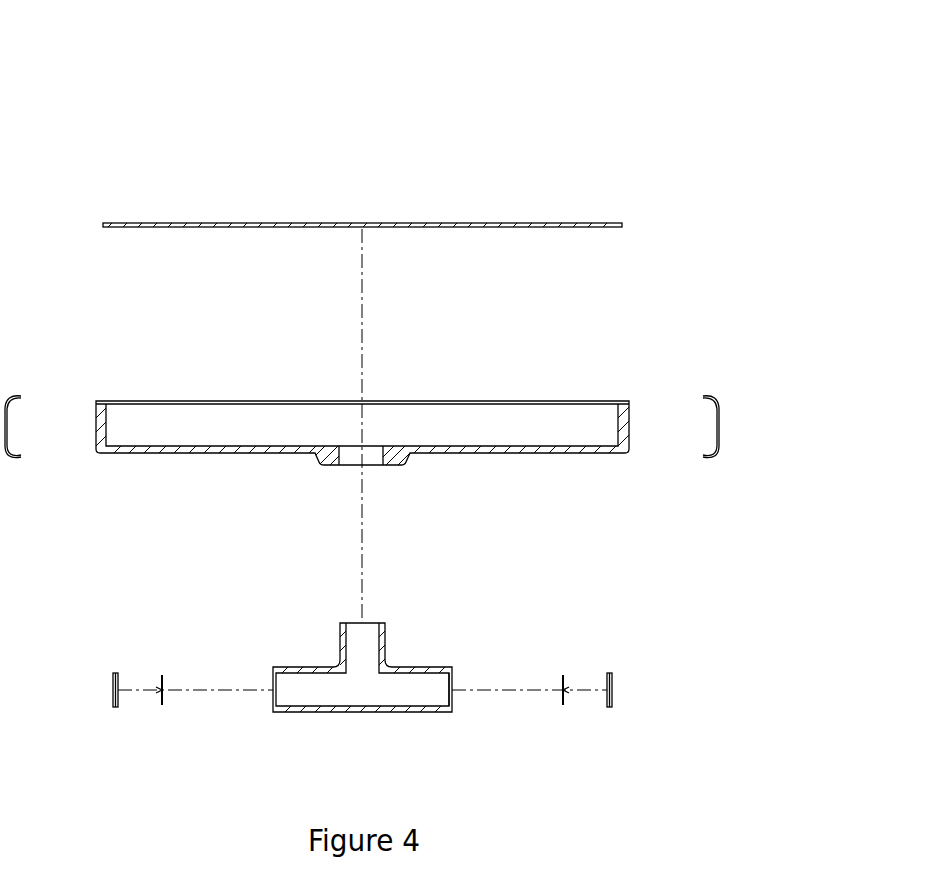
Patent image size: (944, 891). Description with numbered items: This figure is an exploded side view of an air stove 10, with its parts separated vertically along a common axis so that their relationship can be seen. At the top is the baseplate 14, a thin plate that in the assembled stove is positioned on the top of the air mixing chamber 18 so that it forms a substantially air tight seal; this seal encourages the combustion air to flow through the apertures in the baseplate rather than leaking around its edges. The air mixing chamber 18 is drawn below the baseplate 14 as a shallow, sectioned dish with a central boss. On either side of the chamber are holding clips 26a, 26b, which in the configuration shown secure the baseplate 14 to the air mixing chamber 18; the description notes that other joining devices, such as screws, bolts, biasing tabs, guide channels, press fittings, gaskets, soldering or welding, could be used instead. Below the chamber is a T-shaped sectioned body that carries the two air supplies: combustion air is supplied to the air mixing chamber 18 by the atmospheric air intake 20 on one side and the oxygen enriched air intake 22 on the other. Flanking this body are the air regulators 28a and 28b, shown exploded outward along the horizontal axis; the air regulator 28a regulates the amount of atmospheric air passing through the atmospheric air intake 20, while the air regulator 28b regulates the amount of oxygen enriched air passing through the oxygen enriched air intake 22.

The air stove 10 is at (139, 157).
The baseplate 14 is at (512, 223).
The air mixing chamber 18 is at (455, 433).
The atmospheric air intake 20 is at (290, 688).
The oxygen enriched air intake 22 is at (433, 688).
The holding clip 26a is at (712, 458).
The holding clip 26b is at (10, 458).
The air regulator 28a is at (113, 707).
The air regulator 28b is at (607, 707).